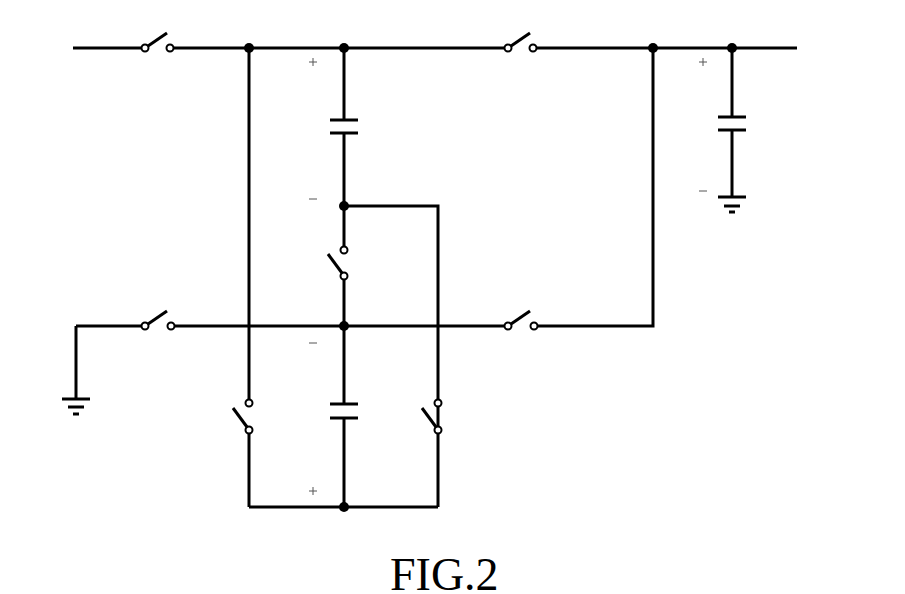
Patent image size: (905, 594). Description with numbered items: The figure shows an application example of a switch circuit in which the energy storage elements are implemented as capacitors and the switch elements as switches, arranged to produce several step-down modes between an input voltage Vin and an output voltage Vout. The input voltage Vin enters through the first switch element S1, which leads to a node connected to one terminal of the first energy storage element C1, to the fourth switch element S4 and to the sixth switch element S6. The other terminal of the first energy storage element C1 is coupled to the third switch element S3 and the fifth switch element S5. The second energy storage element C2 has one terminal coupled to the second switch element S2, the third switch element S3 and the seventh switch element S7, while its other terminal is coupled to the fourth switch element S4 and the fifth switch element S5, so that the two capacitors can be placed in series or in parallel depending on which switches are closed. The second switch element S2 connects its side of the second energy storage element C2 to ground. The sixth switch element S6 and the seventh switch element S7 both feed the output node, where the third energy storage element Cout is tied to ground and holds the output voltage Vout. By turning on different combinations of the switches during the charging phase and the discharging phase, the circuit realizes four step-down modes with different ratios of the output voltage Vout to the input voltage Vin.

The first switch element S1 is at (158, 62).
The second switch element S2 is at (158, 339).
The third switch element S3 is at (356, 265).
The fourth switch element S4 is at (260, 417).
The fifth switch element S5 is at (447, 417).
The sixth switch element S6 is at (521, 62).
The seventh switch element S7 is at (521, 339).
The first energy storage element C1 is at (359, 133).
The second energy storage element C2 is at (359, 418).
The third energy storage element Cout is at (755, 131).
The input voltage Vin is at (55, 30).
The output voltage Vout is at (779, 30).